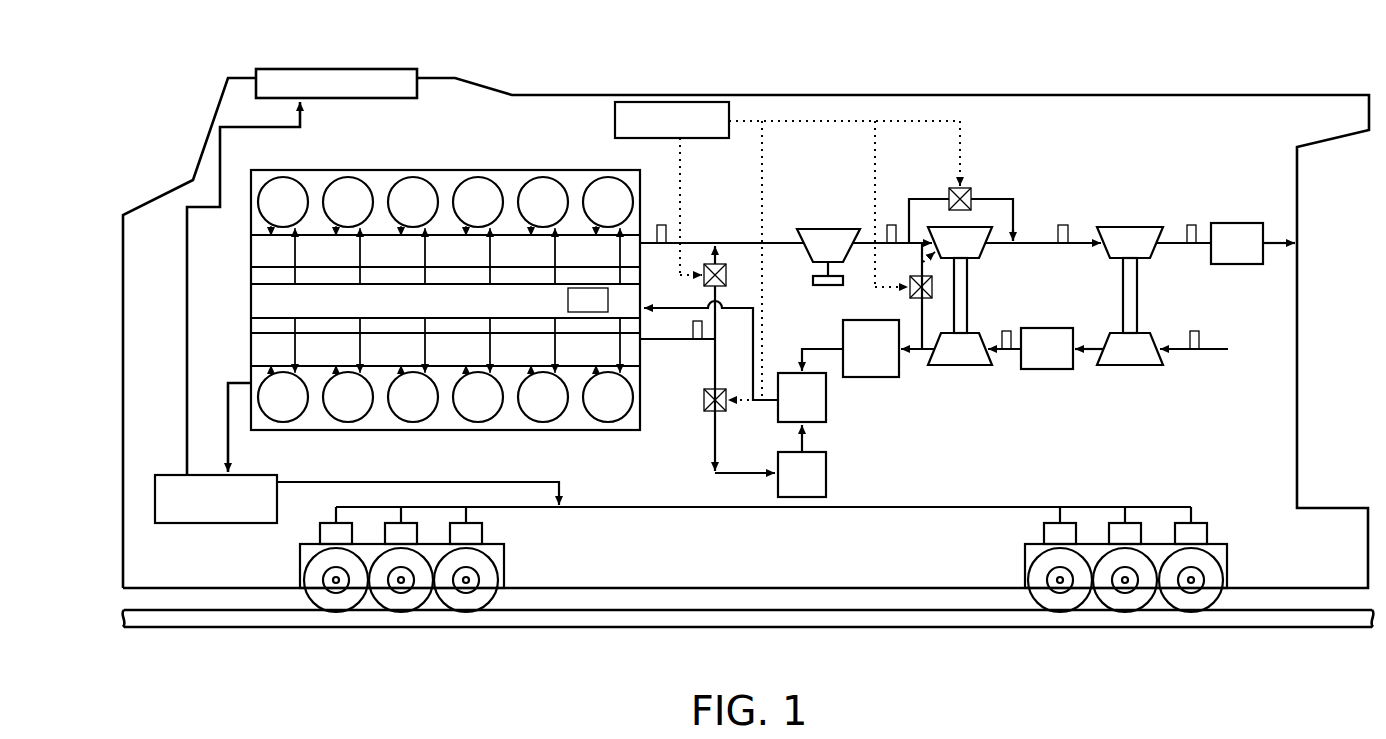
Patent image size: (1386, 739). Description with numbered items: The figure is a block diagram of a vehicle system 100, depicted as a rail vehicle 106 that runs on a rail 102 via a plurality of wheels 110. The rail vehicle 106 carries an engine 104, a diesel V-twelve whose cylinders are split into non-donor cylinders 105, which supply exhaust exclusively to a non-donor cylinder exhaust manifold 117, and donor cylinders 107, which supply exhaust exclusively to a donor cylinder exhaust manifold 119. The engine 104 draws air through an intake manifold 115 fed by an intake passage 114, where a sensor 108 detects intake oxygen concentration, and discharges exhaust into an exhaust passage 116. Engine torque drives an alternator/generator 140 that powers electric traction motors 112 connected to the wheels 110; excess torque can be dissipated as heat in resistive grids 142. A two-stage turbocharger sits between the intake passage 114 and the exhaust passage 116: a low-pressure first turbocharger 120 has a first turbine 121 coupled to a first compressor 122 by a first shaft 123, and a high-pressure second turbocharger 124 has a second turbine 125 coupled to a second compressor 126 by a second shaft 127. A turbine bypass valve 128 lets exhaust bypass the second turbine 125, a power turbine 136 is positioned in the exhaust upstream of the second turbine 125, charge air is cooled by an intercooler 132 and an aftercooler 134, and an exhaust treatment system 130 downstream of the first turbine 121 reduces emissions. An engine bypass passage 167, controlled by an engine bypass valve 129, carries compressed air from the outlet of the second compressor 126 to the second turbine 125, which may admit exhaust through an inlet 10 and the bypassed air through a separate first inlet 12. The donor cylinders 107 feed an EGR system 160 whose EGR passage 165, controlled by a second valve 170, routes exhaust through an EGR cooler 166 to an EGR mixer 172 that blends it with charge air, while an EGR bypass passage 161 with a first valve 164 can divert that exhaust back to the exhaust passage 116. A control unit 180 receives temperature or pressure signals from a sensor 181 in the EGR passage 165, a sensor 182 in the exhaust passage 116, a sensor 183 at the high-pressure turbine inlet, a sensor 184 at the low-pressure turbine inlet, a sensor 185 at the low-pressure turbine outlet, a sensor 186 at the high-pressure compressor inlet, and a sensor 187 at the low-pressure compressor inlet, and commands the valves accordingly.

The vehicle system 100 is at (746, 309).
The rail 102 is at (1292, 628).
The engine 104 is at (424, 295).
The non-donor cylinders 105 is at (418, 172).
The rail vehicle 106 is at (1062, 93).
The donor cylinders 107 is at (413, 421).
The sensor 108 is at (588, 300).
The wheels 110 is at (491, 570).
The traction motors 112 is at (488, 532).
The intake passage 114 is at (1180, 350).
The intake manifold 115 is at (445, 301).
The exhaust passage 116 is at (766, 241).
The non-donor cylinder exhaust manifold 117 is at (251, 250).
The donor cylinder exhaust manifold 119 is at (251, 346).
The first turbocharger 120 is at (1138, 323).
The first turbine 121 is at (1130, 242).
The first compressor 122 is at (1119, 349).
The first shaft 123 is at (1138, 313).
The second turbocharger 124 is at (962, 295).
The second turbine 125 is at (960, 242).
The second compressor 126 is at (974, 349).
The second shaft 127 is at (968, 313).
The turbine bypass valve 128 is at (973, 196).
The engine bypass valve 129 is at (910, 292).
The exhaust treatment system 130 is at (1226, 243).
The intercooler 132 is at (1047, 348).
The aftercooler 134 is at (868, 348).
The power turbine 136 is at (825, 232).
The alternator/generator 140 is at (357, 499).
The resistive grids 142 is at (400, 68).
The EGR system 160 is at (736, 371).
The EGR bypass passage 161 is at (718, 320).
The first valve 164 is at (727, 280).
The EGR passage 165 is at (717, 346).
The EGR cooler 166 is at (802, 461).
The engine bypass passage 167 is at (923, 300).
The second valve 170 is at (726, 411).
The EGR mixer 172 is at (802, 397).
The control unit 180 is at (787, 251).
The sensor 181 is at (697, 340).
The sensor 182 is at (661, 225).
The sensor 183 is at (891, 225).
The sensor 184 is at (1062, 225).
The sensor 185 is at (1191, 225).
The sensor 186 is at (1006, 331).
The sensor 187 is at (1194, 331).
The inlet 10 is at (936, 238).
The first inlet 12 is at (939, 271).